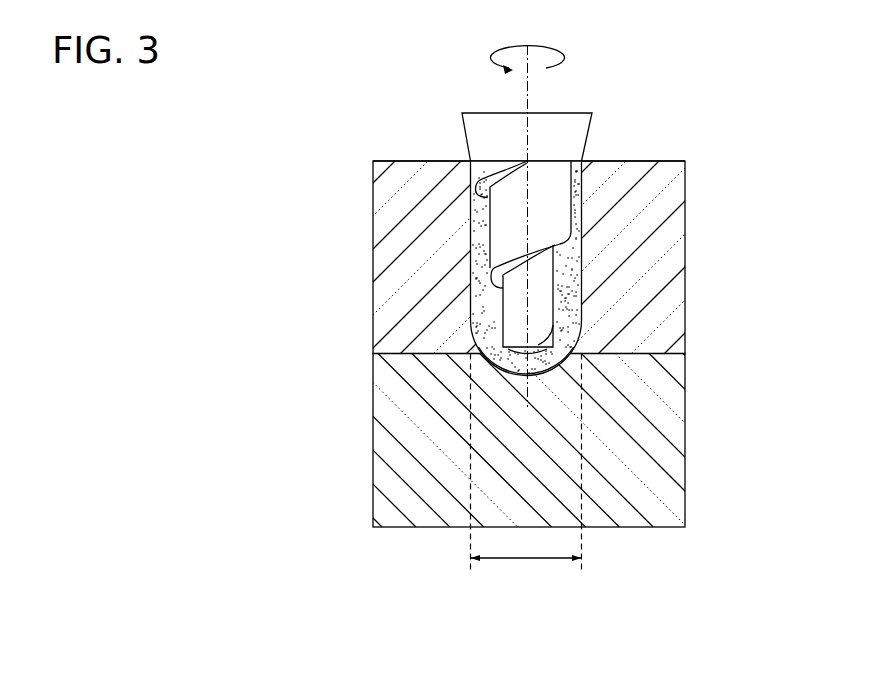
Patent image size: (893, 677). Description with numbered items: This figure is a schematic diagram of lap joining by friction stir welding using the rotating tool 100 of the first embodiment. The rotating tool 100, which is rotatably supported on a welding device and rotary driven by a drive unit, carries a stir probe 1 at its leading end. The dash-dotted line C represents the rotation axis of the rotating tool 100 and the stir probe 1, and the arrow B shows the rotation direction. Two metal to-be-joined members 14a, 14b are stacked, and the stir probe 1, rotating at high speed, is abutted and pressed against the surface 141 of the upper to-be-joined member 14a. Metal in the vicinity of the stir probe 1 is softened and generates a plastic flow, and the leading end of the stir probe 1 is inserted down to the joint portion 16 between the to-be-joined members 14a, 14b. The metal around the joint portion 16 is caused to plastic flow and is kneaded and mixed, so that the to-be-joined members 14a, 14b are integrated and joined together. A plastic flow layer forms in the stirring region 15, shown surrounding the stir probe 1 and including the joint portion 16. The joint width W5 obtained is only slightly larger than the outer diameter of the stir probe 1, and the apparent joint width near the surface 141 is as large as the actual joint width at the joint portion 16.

The stir probe 1 is at (490, 268).
The to-be-joined member 14a is at (373, 201).
The to-be-joined member 14b is at (372, 468).
The stirring region 15 is at (560, 363).
The joint portion 16 is at (497, 372).
The rotating tool for friction stir welding 100 is at (467, 134).
The surface 141 is at (617, 160).
The arrow showing rotation direction B is at (563, 54).
The rotation axis C is at (531, 88).
The joint width W5 is at (526, 474).